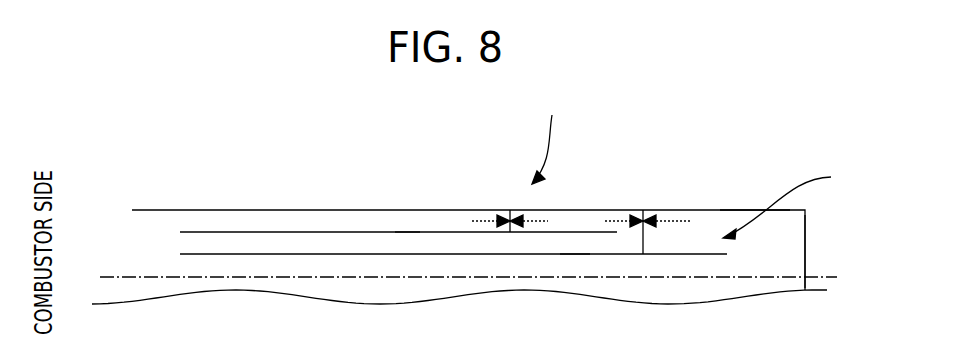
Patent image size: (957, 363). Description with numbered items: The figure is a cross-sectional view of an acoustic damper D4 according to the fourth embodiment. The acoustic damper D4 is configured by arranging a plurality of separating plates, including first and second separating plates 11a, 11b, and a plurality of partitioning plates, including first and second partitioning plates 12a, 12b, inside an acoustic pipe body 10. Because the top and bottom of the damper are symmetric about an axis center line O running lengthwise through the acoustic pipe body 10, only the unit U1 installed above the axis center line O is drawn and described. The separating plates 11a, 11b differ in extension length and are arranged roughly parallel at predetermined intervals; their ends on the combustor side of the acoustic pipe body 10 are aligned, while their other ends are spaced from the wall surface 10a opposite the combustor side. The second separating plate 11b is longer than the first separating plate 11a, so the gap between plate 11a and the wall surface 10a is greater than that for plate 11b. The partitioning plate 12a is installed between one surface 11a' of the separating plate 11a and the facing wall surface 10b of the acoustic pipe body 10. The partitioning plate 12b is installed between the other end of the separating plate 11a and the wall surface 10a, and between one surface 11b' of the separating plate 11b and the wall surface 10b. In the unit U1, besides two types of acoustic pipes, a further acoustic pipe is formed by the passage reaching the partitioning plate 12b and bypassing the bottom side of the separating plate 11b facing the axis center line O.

The acoustic pipe body 10 is at (284, 208).
The first separating plate 11a is at (356, 232).
The second separating plate 11b is at (400, 262).
The one surface of the separating plate 11a 11a' is at (403, 185).
The one surface of the separating plate 11b 11b' is at (594, 195).
The first partitioning plate 12a is at (498, 208).
The second partitioning plate 12b is at (645, 245).
The wall surface 10a is at (803, 262).
The wall surface 10b is at (747, 213).
The unit U1 is at (791, 201).
The acoustic damper D4 is at (552, 135).
The axis center line O is at (861, 308).